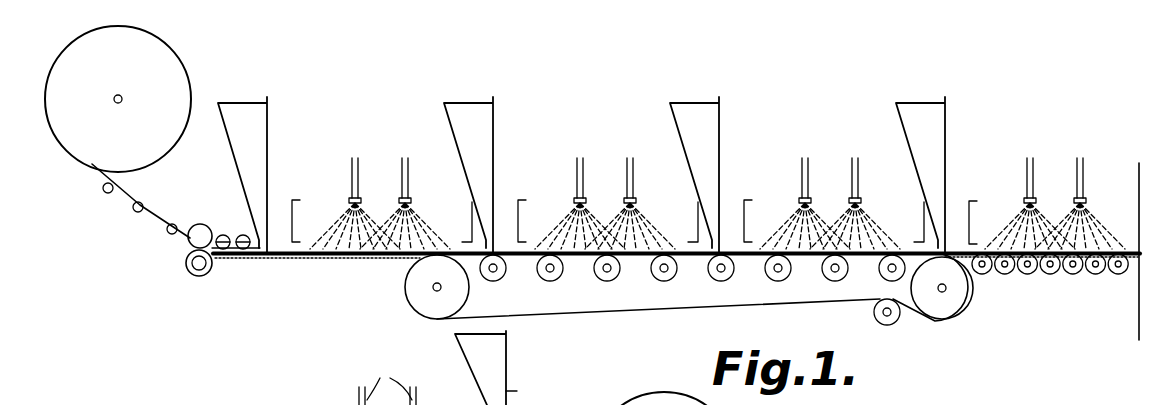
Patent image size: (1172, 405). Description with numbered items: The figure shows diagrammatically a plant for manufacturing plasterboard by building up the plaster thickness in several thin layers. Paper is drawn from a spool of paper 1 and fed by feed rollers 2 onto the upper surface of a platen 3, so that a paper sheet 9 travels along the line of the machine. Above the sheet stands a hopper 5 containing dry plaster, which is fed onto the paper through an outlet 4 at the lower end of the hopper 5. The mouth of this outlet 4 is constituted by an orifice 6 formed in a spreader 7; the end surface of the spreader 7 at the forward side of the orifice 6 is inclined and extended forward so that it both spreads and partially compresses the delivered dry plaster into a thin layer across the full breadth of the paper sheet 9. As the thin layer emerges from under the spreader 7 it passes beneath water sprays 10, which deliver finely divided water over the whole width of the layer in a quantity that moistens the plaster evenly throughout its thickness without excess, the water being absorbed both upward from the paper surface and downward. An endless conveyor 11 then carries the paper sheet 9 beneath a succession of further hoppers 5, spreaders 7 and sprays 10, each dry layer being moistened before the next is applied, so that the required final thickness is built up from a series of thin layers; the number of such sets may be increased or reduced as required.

The spool of paper 1 is at (172, 135).
The feed rollers 2 is at (242, 235).
The platen 3 is at (352, 256).
The outlet 4 is at (258, 256).
The hopper 5 is at (957, 153).
The orifice 6 is at (285, 258).
The spreader 7 is at (949, 244).
The paper sheet 9 is at (146, 213).
The water sprays 10 is at (404, 175).
The endless conveyor 11 is at (822, 300).